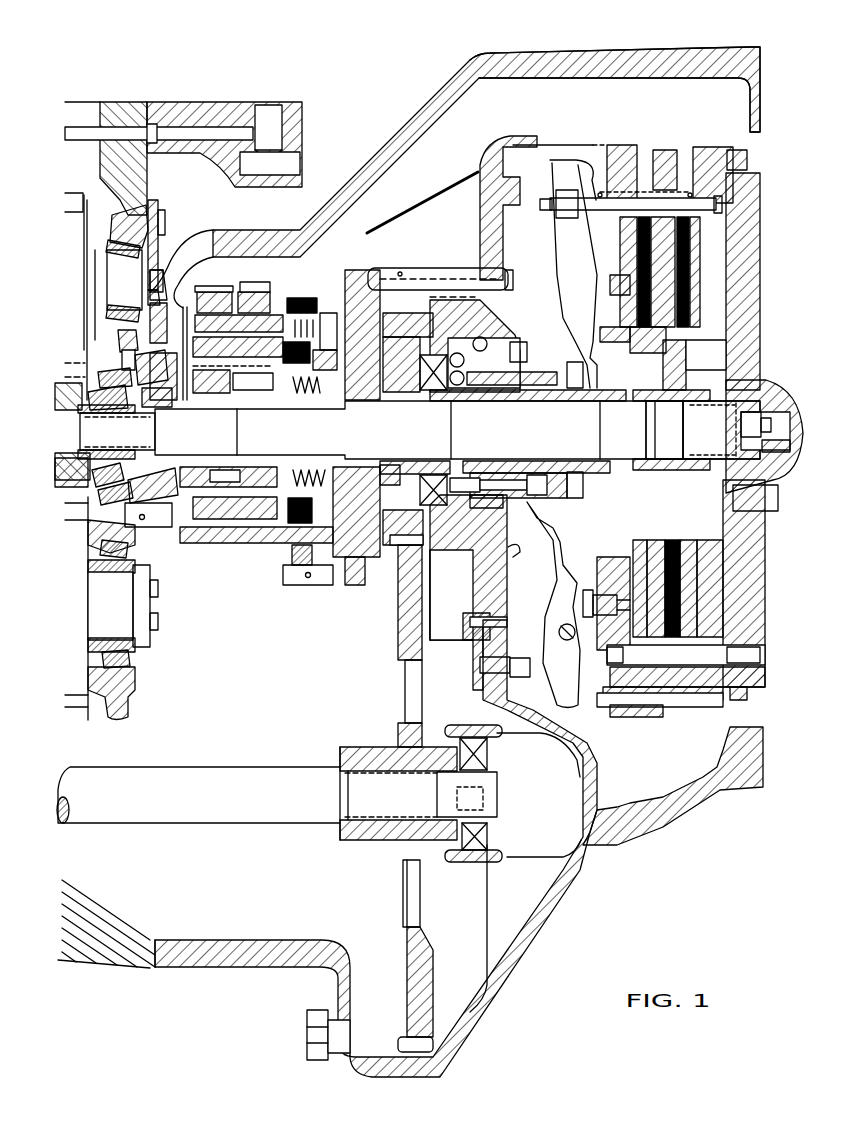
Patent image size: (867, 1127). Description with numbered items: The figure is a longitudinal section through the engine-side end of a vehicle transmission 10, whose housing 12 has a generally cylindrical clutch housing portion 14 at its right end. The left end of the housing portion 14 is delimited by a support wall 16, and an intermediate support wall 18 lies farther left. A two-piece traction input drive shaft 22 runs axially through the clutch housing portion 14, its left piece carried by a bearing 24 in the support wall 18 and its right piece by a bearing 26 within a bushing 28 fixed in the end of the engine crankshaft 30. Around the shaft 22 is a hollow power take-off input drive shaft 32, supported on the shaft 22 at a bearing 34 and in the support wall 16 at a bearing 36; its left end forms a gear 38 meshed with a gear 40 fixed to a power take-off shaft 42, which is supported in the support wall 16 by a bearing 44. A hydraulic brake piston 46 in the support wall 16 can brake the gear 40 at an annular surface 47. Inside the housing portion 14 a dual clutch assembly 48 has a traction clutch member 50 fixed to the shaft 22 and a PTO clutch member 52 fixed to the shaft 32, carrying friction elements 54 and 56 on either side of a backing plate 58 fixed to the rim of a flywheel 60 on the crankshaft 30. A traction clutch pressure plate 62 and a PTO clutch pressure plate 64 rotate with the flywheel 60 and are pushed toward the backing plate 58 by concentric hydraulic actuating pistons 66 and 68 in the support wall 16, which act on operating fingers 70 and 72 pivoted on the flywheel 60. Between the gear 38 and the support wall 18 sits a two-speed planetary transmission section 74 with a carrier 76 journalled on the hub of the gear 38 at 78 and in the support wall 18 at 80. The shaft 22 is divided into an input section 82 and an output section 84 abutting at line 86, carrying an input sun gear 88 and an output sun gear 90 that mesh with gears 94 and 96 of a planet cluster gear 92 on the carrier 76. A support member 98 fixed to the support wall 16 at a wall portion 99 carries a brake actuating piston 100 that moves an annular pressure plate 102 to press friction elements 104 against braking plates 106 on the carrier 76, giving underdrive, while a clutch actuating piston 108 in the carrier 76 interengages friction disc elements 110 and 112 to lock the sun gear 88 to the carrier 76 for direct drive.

The vehicle transmission 10 is at (372, 67).
The housing 12 is at (380, 140).
The clutch housing portion 14 is at (596, 53).
The support wall 16 is at (479, 150).
The intermediate support wall 18 is at (147, 181).
The traction input drive shaft 22 is at (772, 430).
The bearing 24 is at (116, 432).
The bearing 26 is at (745, 424).
The bushing 28 is at (790, 443).
The engine crankshaft 30 is at (796, 380).
The power take-off input drive shaft 32 is at (520, 400).
The bearing 34 is at (673, 401).
The bearing 36 is at (470, 402).
The gear 38 is at (393, 606).
The gear 40 is at (433, 968).
The power take-off shaft 42 is at (202, 818).
The bearing 44 is at (488, 754).
The hydraulic brake piston 46 is at (465, 600).
The annular surface 47 is at (433, 1003).
The dual clutch assembly 48 is at (660, 128).
The traction clutch member 50 is at (723, 342).
The PTO clutch member 52 is at (663, 365).
The traction clutch friction elements 54 is at (733, 283).
The PTO clutch friction elements 56 is at (633, 312).
The backing plate 58 is at (700, 247).
The flywheel 60 is at (760, 197).
The traction clutch pressure plate 62 is at (720, 580).
The PTO clutch pressure plate 64 is at (630, 640).
The traction clutch actuating piston 66 is at (553, 498).
The PTO clutch actuating piston 68 is at (508, 548).
The traction clutch operating finger 70 is at (557, 268).
The PTO clutch operating finger 72 is at (560, 562).
The two-speed planetary transmission section 74 is at (315, 272).
The carrier 76 is at (275, 552).
The journal support 78 is at (356, 403).
The journal support 80 is at (173, 439).
The input section 82 is at (305, 434).
The output section 84 is at (220, 436).
The abutment line 86 is at (238, 457).
The input sun gear 88 is at (257, 408).
The output sun gear 90 is at (200, 408).
The planet cluster gear 92 is at (195, 285).
The gear 94 is at (257, 291).
The gear 96 is at (225, 291).
The support member 98 is at (349, 278).
The wall portion 99 is at (387, 268).
The brake actuating piston 100 is at (348, 586).
The annular pressure plate 102 is at (320, 586).
The friction elements 104 is at (279, 584).
The braking plates 106 is at (331, 277).
The clutch actuating piston 108 is at (368, 466).
The friction disc elements 110 is at (317, 466).
The friction disc elements 112 is at (273, 566).